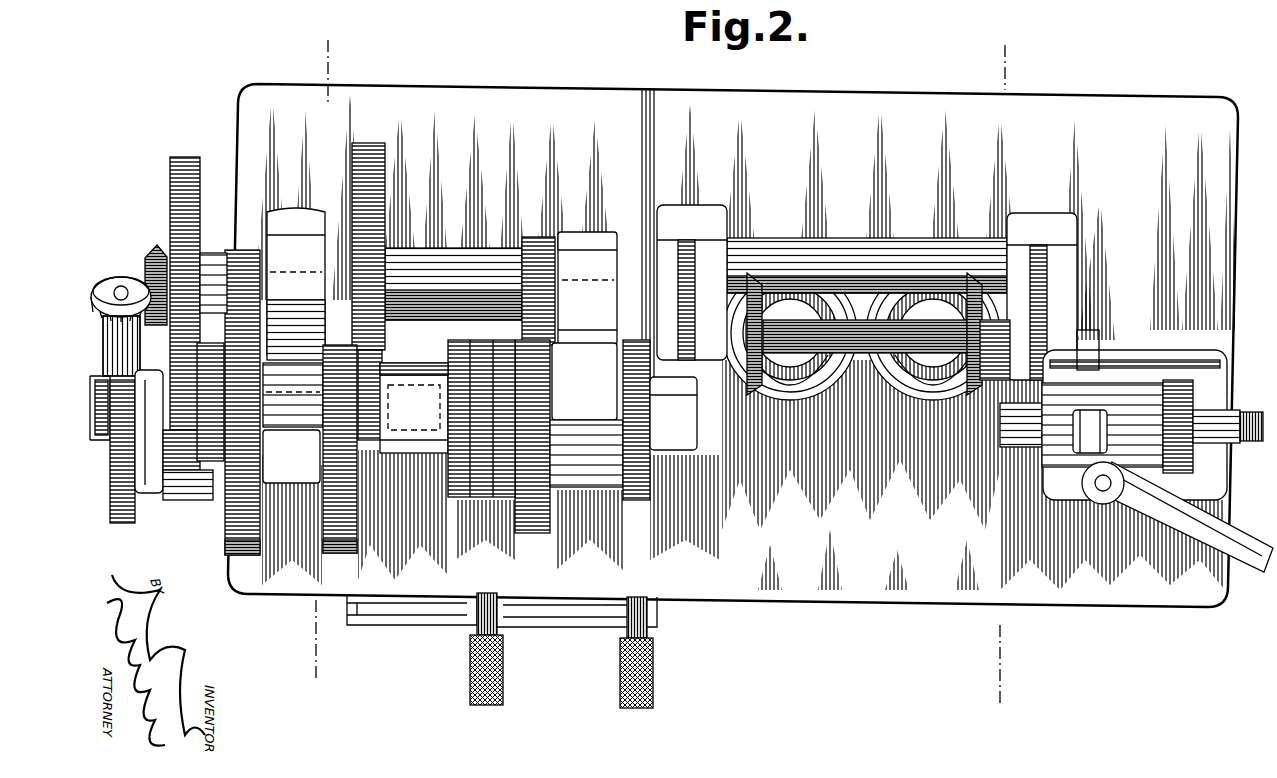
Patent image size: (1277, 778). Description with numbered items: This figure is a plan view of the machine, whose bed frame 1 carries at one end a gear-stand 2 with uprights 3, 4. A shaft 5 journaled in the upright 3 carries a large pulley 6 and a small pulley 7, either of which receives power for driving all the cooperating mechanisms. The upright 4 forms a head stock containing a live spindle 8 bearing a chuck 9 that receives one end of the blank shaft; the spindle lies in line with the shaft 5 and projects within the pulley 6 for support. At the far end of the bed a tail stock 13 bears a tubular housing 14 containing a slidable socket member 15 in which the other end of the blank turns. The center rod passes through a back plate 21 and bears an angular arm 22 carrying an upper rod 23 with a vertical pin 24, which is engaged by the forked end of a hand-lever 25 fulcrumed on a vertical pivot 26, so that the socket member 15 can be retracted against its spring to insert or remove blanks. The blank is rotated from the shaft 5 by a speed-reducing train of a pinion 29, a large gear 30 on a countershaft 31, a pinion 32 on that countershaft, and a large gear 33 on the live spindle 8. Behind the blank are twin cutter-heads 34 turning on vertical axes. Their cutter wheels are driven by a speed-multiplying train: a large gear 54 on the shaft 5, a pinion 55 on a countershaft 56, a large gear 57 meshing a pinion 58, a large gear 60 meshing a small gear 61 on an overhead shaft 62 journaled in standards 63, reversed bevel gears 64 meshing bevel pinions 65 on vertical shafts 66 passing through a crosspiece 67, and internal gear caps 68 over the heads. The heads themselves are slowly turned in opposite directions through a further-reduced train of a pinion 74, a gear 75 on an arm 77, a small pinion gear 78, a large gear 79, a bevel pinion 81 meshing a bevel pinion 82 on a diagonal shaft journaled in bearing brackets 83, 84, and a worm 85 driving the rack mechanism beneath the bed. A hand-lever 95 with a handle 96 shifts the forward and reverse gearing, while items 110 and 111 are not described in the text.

The bed frame 1 is at (866, 544).
The gear-stand 2 is at (392, 455).
The upright 3 is at (442, 281).
The upright 4 is at (779, 371).
The shaft 5 is at (428, 455).
The large pulley 6 is at (497, 497).
The small pulley 7 is at (405, 455).
The live spindle 8 is at (615, 435).
The chuck 9 is at (668, 440).
The tail stock 13 is at (1125, 348).
The tubular housing 14 is at (1140, 388).
The socket member 15 is at (1020, 445).
The back plate 21 is at (1195, 465).
The angular arm 22 is at (1228, 415).
The upper rod 23 is at (1195, 400).
The vertical pin 24 is at (1090, 415).
The hand-lever 25 is at (1150, 515).
The vertical pivot 26 is at (1100, 487).
The pinion 29 is at (362, 445).
The large gear 30 is at (372, 143).
The countershaft 31 is at (462, 248).
The pinion 32 is at (540, 237).
The large gear 33 is at (548, 535).
The twin cutter-heads 34 is at (882, 400).
The large gear 54 is at (233, 553).
The pinion 55 is at (233, 480).
The countershaft 56 is at (268, 488).
The large gear 57 is at (330, 560).
The pinion 58 is at (318, 432).
The large gear 60 is at (262, 357).
The small gear 61 is at (262, 300).
The shaft 62 is at (462, 318).
The standards 63 is at (720, 240).
The reversed bevel gears 64 is at (752, 278).
The bevel pinions 65 is at (805, 300).
The vertical shafts 66 is at (788, 350).
The crosspiece 67 is at (870, 285).
The internal gear caps 68 is at (750, 400).
The pinion 74 is at (185, 480).
The gear 75 is at (205, 455).
The arm 77 is at (150, 440).
The small pinion gear 78 is at (175, 455).
The large gear 79 is at (172, 175).
The bevel pinion 81 is at (157, 247).
The bevel pinion 82 is at (118, 280).
The bearing bracket 83 is at (138, 346).
The bearing bracket 84 is at (130, 430).
The worm 85 is at (97, 408).
The hand-lever 95 is at (422, 612).
The handle 96 is at (503, 690).
The stem 110 is at (586, 672).
The knob 111 is at (655, 676).